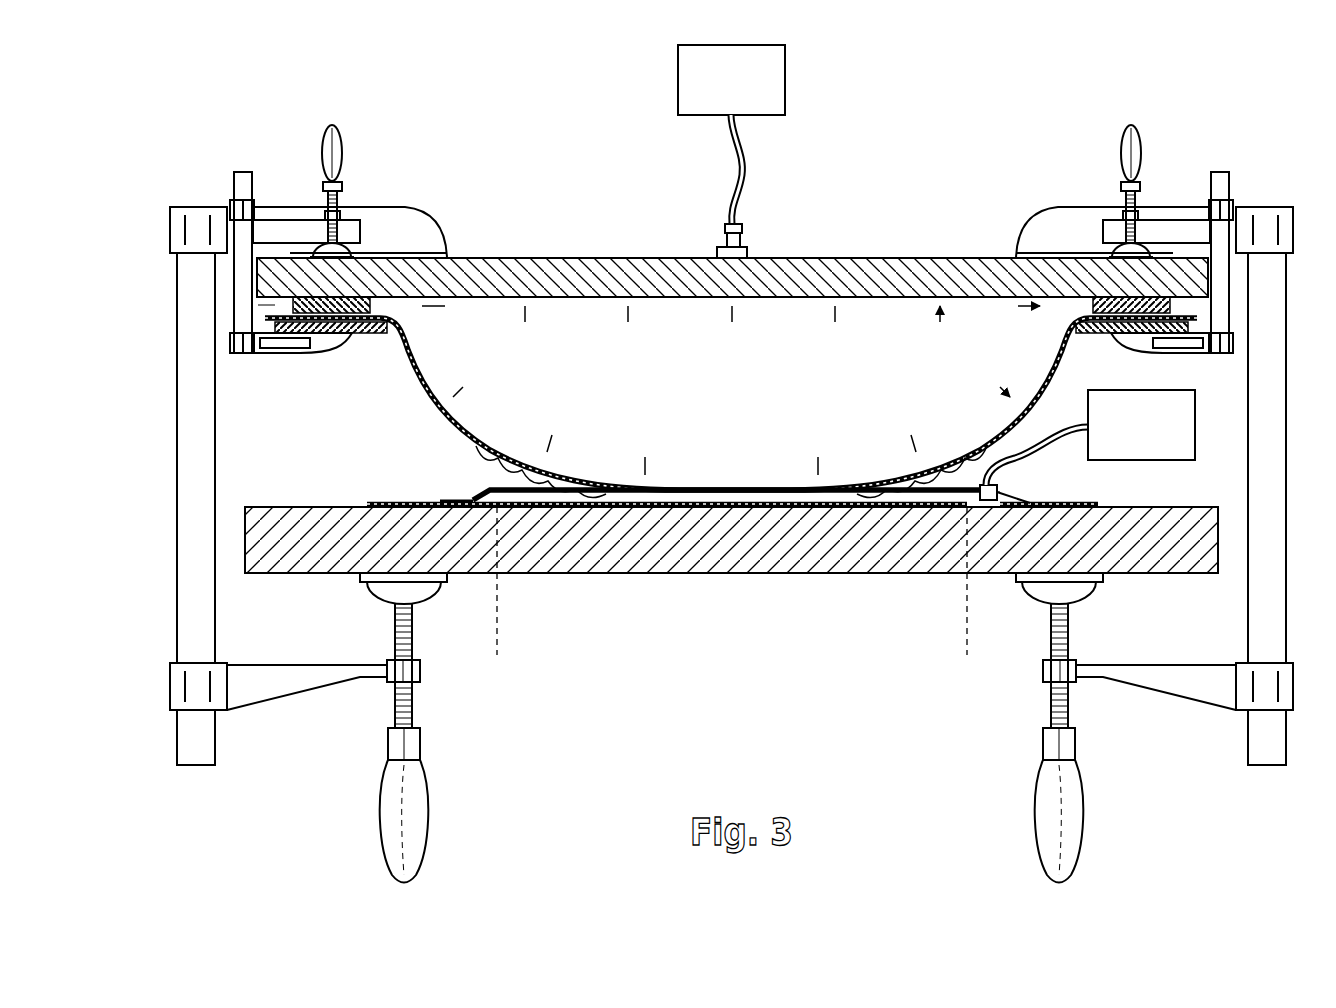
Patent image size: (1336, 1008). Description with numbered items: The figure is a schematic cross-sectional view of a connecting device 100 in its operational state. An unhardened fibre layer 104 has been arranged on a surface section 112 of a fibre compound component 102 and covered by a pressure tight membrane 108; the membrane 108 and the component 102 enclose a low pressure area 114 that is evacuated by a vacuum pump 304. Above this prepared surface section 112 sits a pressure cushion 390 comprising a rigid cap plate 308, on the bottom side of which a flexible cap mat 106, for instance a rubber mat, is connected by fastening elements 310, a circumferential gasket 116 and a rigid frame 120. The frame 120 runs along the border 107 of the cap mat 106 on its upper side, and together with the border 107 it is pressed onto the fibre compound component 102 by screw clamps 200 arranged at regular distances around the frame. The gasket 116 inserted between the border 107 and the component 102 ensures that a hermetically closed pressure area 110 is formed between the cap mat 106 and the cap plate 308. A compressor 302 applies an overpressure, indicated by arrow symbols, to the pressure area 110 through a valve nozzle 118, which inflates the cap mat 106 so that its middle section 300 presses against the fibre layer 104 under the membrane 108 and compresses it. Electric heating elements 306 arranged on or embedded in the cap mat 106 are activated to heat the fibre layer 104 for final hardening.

The connecting device 100 is at (934, 138).
The pressure cushion 390 is at (543, 220).
The fibre compound component 102 is at (592, 542).
The fibre layer 104 is at (818, 520).
The cap mat 106 is at (1045, 384).
The border 107 is at (258, 305).
The pressure tight membrane 108 is at (952, 488).
The pressure area 110 is at (752, 363).
The surface section 112 is at (967, 655).
The low pressure area 114 is at (993, 500).
The gasket 116 is at (373, 305).
The valve nozzle 118 is at (723, 240).
The frame 120 is at (368, 324).
The screw clamps 200 is at (403, 811).
The middle section 300 is at (737, 468).
The compressor 302 is at (753, 94).
The vacuum pump 304 is at (1163, 440).
The heating element 306 is at (497, 452).
The cap plate 308 is at (787, 282).
The fastening element 310 is at (335, 153).